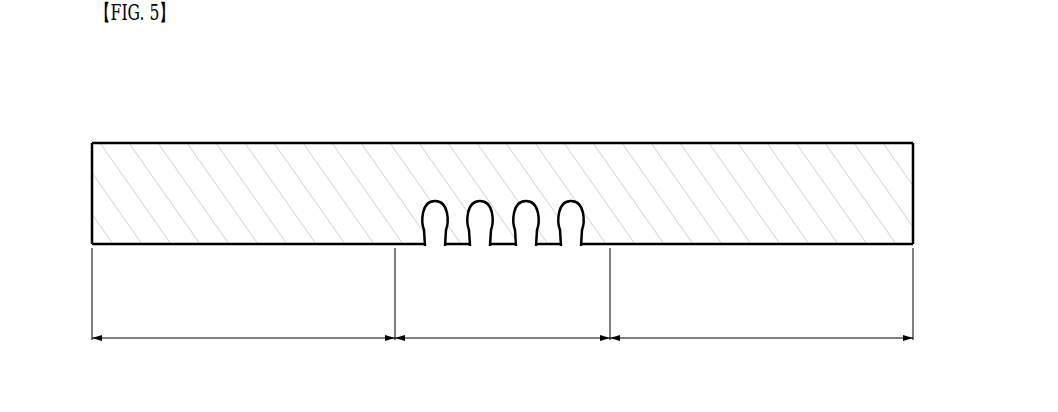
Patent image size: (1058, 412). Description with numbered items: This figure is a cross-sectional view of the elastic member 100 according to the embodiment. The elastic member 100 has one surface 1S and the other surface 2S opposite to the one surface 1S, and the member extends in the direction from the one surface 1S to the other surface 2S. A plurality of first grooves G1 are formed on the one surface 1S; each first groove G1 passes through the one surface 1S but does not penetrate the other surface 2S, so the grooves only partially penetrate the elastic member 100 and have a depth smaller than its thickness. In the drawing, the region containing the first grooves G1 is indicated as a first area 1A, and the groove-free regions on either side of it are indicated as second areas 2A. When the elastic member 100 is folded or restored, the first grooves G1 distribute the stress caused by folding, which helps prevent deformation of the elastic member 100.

The elastic member 100 is at (92, 190).
The first groove G1 is at (438, 225).
The other surface 2S is at (721, 143).
The one surface 1S is at (771, 246).
The first area (groove area) 1A is at (502, 308).
The second area 2A is at (502, 308).